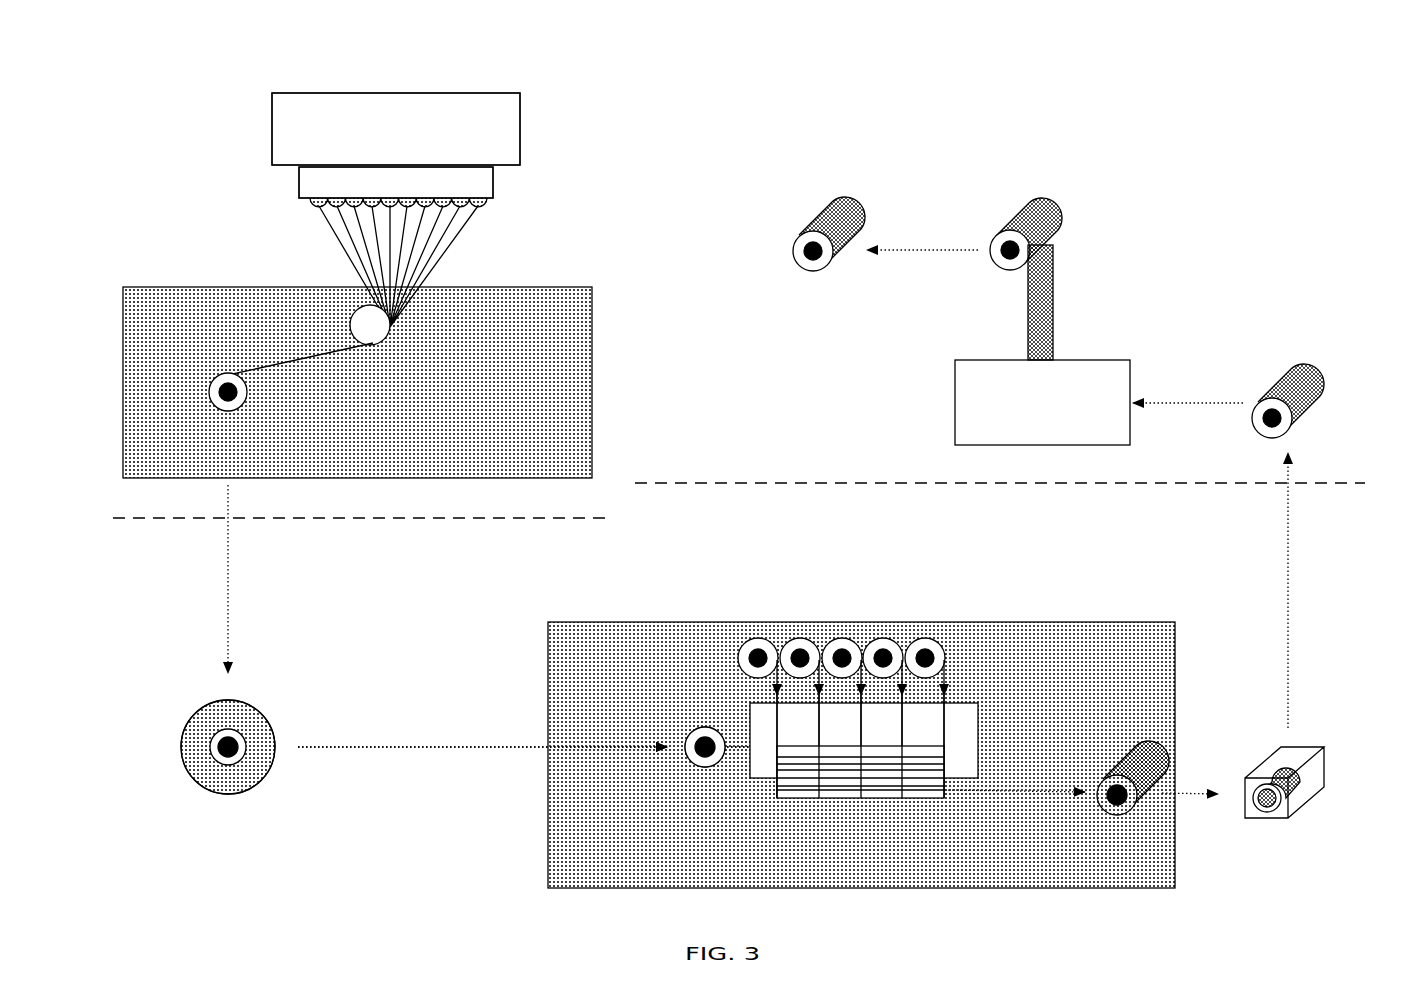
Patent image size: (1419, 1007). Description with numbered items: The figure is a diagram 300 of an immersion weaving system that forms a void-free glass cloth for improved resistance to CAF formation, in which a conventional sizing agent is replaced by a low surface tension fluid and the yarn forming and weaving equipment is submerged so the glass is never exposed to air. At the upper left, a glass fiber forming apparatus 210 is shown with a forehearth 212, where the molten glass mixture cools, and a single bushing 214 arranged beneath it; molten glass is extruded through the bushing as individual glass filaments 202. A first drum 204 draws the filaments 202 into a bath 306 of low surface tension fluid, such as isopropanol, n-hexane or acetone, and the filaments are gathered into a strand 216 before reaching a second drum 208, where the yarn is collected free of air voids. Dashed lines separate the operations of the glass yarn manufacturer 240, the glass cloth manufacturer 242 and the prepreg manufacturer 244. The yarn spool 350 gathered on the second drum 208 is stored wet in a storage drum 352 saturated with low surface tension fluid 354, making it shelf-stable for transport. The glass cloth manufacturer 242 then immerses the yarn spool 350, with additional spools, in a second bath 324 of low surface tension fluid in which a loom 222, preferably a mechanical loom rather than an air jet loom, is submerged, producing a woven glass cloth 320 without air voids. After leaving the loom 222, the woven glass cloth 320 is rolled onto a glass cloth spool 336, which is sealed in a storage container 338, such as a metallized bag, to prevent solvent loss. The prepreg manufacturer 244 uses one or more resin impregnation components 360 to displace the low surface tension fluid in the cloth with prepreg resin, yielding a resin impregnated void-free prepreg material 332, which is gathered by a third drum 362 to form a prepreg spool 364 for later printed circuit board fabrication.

The diagram 300 is at (1185, 120).
The glass fiber forming apparatus 210 is at (532, 120).
The forehearth 212 is at (462, 138).
The bushing 214 is at (448, 191).
The glass filaments 202 is at (472, 247).
The bath of low surface tension fluid 306 is at (302, 338).
The first drum 204 is at (400, 341).
The strand 216 is at (316, 372).
The second drum 208 is at (244, 418).
The glass yarn manufacturer 240 is at (360, 504).
The glass cloth manufacturer 242 is at (409, 579).
The prepreg manufacturer 244 is at (1000, 468).
The prepreg spool 364 is at (793, 233).
The third drum 362 is at (988, 230).
The prepreg material 332 is at (1060, 287).
The resin impregnation components 360 is at (1120, 440).
The glass cloth spool 336 is at (1277, 385).
The storage drum 352 is at (265, 695).
The low surface tension fluid 354 is at (265, 745).
The yarn spool 350 is at (210, 762).
The bath of low surface tension fluid 324 is at (718, 683).
The loom 222 is at (978, 702).
The woven glass cloth 320 is at (965, 832).
The storage container 338 is at (1297, 805).